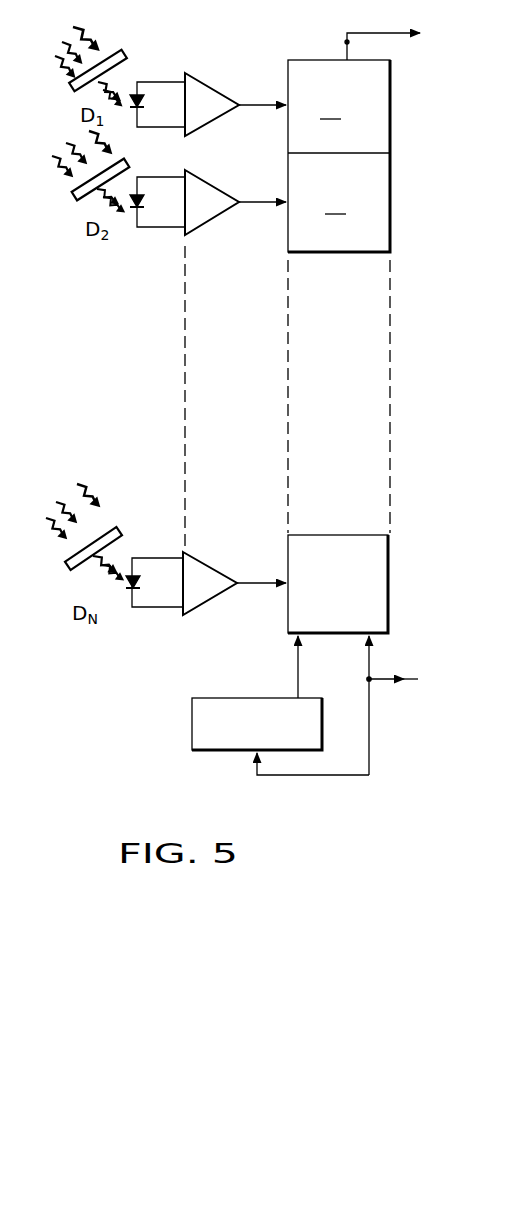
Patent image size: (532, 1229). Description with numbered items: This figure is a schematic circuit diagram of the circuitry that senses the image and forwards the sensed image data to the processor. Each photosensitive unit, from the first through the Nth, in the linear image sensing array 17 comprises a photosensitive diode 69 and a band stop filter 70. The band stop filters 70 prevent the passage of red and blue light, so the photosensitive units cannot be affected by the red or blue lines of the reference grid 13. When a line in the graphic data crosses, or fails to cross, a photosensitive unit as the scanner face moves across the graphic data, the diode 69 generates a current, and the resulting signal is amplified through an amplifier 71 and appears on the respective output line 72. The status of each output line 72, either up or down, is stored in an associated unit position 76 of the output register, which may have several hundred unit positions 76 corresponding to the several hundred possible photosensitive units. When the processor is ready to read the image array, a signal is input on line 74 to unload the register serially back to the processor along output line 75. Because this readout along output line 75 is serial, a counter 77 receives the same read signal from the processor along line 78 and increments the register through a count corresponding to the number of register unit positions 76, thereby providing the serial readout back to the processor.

The reference grid 13 is at (392, 136).
The linear image sensing array 17 is at (168, 308).
The photosensitive diode 69 is at (146, 94).
The band stop filter 70 is at (124, 57).
The amplifier 71 is at (223, 94).
The output line 72 is at (256, 104).
The line 74 is at (369, 668).
The output line 75 is at (347, 42).
The unit position 76 is at (333, 155).
The counter 77 is at (218, 703).
The line 78 is at (369, 775).